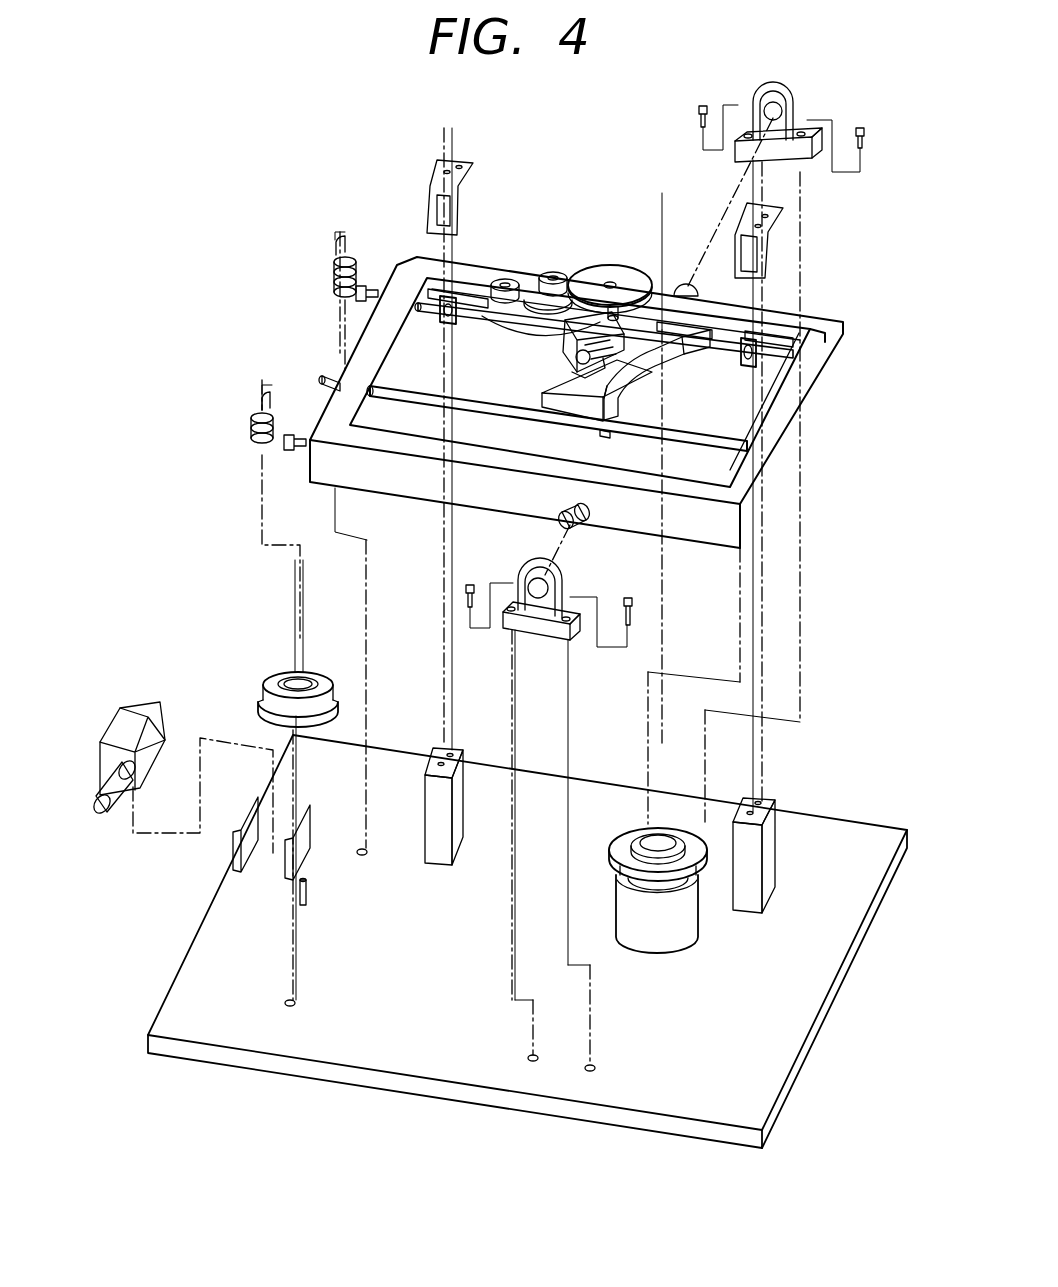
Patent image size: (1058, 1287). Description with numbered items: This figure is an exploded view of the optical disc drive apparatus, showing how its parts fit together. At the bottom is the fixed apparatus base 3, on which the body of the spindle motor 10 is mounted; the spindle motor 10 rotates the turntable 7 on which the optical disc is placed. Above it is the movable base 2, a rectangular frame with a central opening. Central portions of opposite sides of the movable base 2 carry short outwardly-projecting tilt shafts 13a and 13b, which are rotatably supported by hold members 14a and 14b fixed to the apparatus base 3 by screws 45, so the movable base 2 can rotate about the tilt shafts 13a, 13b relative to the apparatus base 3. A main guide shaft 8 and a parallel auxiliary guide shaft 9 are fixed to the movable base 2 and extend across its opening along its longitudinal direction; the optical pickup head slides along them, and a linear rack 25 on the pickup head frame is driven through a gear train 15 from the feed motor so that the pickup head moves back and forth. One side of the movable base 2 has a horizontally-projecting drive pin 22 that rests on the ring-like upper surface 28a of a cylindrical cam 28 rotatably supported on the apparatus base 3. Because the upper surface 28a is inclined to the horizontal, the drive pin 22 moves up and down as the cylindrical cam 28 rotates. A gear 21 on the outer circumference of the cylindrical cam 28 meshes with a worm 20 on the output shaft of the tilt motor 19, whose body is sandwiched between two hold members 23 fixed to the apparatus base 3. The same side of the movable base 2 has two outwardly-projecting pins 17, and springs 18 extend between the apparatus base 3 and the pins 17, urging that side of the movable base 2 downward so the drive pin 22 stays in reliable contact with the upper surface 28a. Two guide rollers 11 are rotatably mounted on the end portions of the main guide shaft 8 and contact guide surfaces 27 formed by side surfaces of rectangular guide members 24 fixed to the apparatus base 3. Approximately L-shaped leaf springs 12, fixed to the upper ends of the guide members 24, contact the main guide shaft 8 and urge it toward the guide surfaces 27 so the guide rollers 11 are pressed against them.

The movable base 2 is at (808, 400).
The apparatus base 3 is at (858, 828).
The turntable 7 is at (625, 830).
The main guide shaft 8 is at (548, 335).
The auxiliary guide shaft 9 is at (490, 405).
The spindle motor 10 is at (646, 897).
The guide rollers 11 is at (446, 322).
The leaf springs 12 is at (470, 165).
The tilt shaft 13a is at (680, 284).
The tilt shaft 13b is at (584, 522).
The hold member 14a is at (790, 95).
The hold member 14b is at (545, 628).
The gear train 15 is at (655, 262).
The pins 17 is at (372, 288).
The springs 18 is at (330, 282).
The tilt motor 19 is at (132, 712).
The worm 20 is at (103, 812).
The gear 21 is at (271, 674).
The drive pin 22 is at (320, 380).
The hold members 23 is at (285, 860).
The guide members 24 is at (622, 857).
The rack 25 is at (695, 326).
The guide surfaces 27 is at (436, 848).
The cylindrical cam 28 is at (285, 676).
The upper surface 28a is at (320, 676).
The screws 45 is at (630, 598).